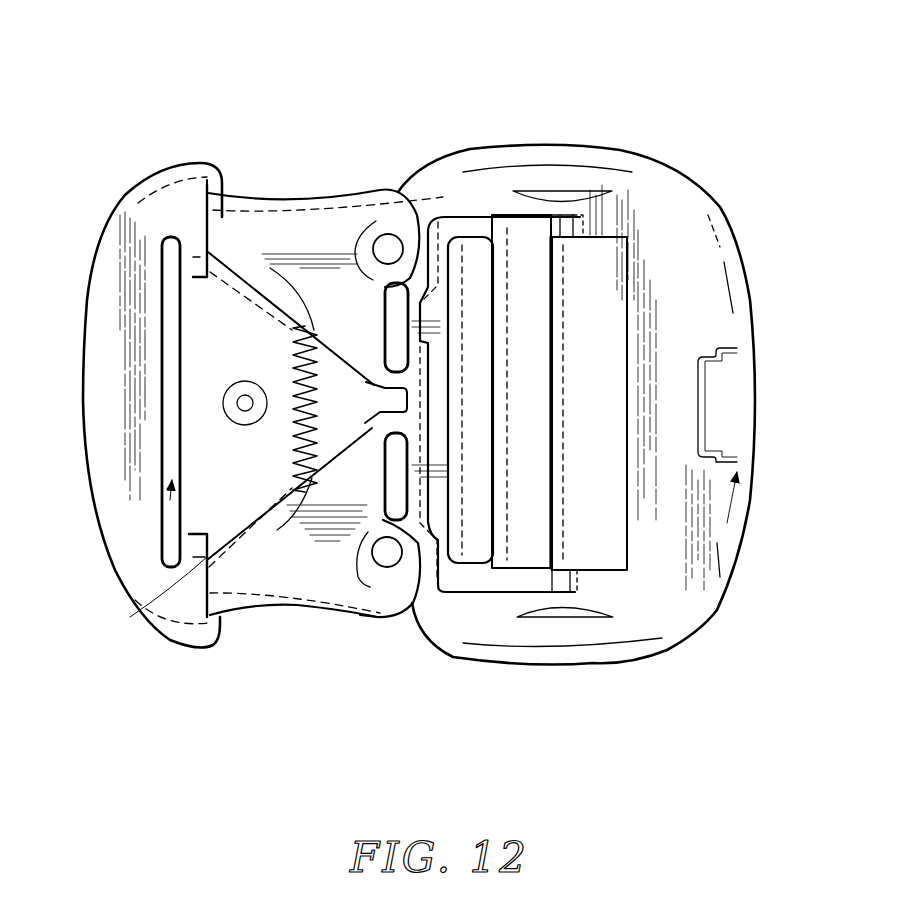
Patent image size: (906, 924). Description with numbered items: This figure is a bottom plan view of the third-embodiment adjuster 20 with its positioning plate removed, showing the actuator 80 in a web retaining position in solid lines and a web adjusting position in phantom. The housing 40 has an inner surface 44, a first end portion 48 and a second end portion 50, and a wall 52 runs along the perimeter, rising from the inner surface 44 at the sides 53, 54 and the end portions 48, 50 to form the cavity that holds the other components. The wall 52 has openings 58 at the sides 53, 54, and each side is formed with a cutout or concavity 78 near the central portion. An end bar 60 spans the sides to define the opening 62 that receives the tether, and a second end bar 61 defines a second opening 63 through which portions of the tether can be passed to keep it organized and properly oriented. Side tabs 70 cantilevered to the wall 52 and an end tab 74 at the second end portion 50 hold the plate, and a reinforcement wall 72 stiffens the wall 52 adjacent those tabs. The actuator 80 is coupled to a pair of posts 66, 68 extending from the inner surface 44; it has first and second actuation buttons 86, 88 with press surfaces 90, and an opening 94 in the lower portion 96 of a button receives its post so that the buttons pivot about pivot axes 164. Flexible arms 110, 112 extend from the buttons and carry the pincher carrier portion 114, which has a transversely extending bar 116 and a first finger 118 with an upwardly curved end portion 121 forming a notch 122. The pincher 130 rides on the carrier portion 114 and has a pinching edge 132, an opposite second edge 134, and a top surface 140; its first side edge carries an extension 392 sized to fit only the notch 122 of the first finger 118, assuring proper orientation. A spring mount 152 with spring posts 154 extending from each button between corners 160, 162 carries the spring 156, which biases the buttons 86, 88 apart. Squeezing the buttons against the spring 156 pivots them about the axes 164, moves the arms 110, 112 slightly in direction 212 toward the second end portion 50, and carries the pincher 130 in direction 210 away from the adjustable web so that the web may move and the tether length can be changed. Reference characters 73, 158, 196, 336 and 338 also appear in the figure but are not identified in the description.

The adjuster 20 is at (697, 108).
The housing 40 is at (734, 215).
The inner surface 44 is at (261, 369).
The first end portion 48 is at (113, 433).
The second end portion 50 is at (686, 157).
The wall 52 is at (640, 173).
The side 53 is at (170, 617).
The side 54 is at (563, 143).
The openings 58 is at (242, 188).
The end bar 60 is at (710, 267).
The second end bar 61 is at (107, 527).
The opening 62 is at (614, 465).
The second opening 63 is at (192, 556).
The post 66 is at (386, 570).
The post 68 is at (373, 280).
The side tabs 70 is at (532, 193).
The reinforcement wall 72 is at (587, 148).
The hook 73 is at (197, 250).
The end tab 74 is at (720, 380).
The cutout or concavity 78 is at (264, 192).
The actuator 80 is at (440, 205).
The first actuation button 86 is at (300, 580).
The second actuation button 88 is at (275, 217).
The press surface 90 is at (343, 197).
The opening 94 is at (402, 195).
The lower portions 96 is at (370, 463).
The flexible arm 110 is at (380, 407).
The flexible arm 112 is at (368, 382).
The pincher carrier portion 114 is at (477, 577).
The transversely extending bar 116 is at (440, 323).
The first finger 118 is at (494, 607).
The upwardly curved end portion 121 is at (568, 238).
The notch 122 is at (533, 249).
The pincher 130 is at (562, 513).
The pinching edge 132 is at (483, 447).
The second edge 134 is at (553, 350).
The top surface 140 is at (520, 480).
The spring mount 152 is at (207, 340).
The spring posts 154 is at (290, 409).
The spring 156 is at (293, 433).
The jaw tip 158 is at (360, 207).
The corner 160 is at (383, 368).
The corner 162 is at (222, 200).
The pivot axis 164 is at (362, 233).
The pivot 196 is at (243, 406).
The direction 210 is at (668, 672).
The direction 212 is at (418, 752).
The channel bottom 336 is at (517, 597).
The channel 338 is at (502, 213).
The extension 392 is at (454, 611).